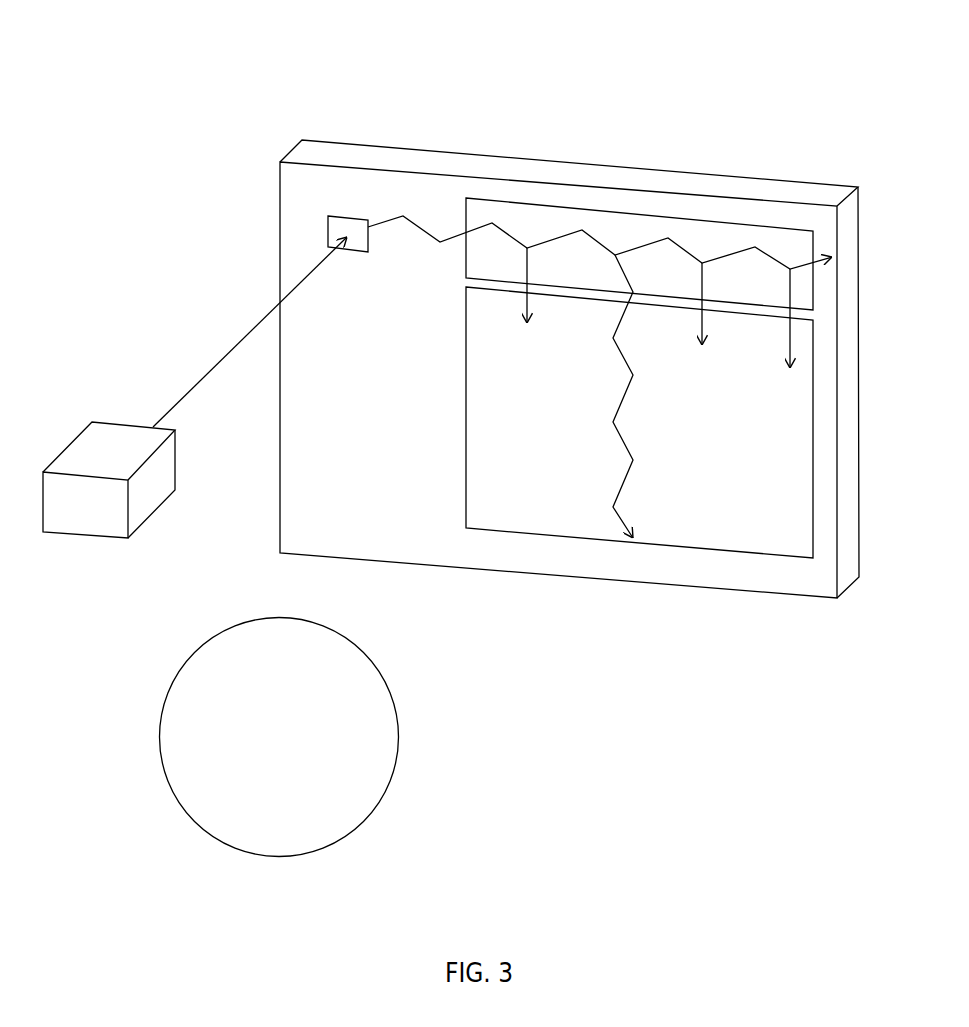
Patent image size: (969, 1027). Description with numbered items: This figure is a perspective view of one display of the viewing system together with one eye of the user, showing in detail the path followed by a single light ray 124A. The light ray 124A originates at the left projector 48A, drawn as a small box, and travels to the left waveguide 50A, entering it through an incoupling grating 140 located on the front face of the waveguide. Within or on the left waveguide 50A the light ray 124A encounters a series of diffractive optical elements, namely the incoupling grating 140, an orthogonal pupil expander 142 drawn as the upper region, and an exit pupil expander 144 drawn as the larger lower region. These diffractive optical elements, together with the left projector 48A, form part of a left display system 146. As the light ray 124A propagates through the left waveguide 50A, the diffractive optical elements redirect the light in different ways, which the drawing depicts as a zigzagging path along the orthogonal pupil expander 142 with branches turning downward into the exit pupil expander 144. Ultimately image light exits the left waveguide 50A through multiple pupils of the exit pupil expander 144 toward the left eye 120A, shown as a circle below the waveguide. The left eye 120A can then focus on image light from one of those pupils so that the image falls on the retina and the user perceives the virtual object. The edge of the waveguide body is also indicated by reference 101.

The left display system 146 is at (286, 75).
The left waveguide 50A is at (768, 163).
The display housing edge 101 is at (860, 285).
The orthogonal pupil expander 142 is at (597, 210).
The exit pupil expander 144 is at (792, 487).
The incoupling grating 140 is at (325, 232).
The light ray 124A is at (253, 330).
The left projector 48A is at (67, 450).
The left eye 120A is at (395, 778).